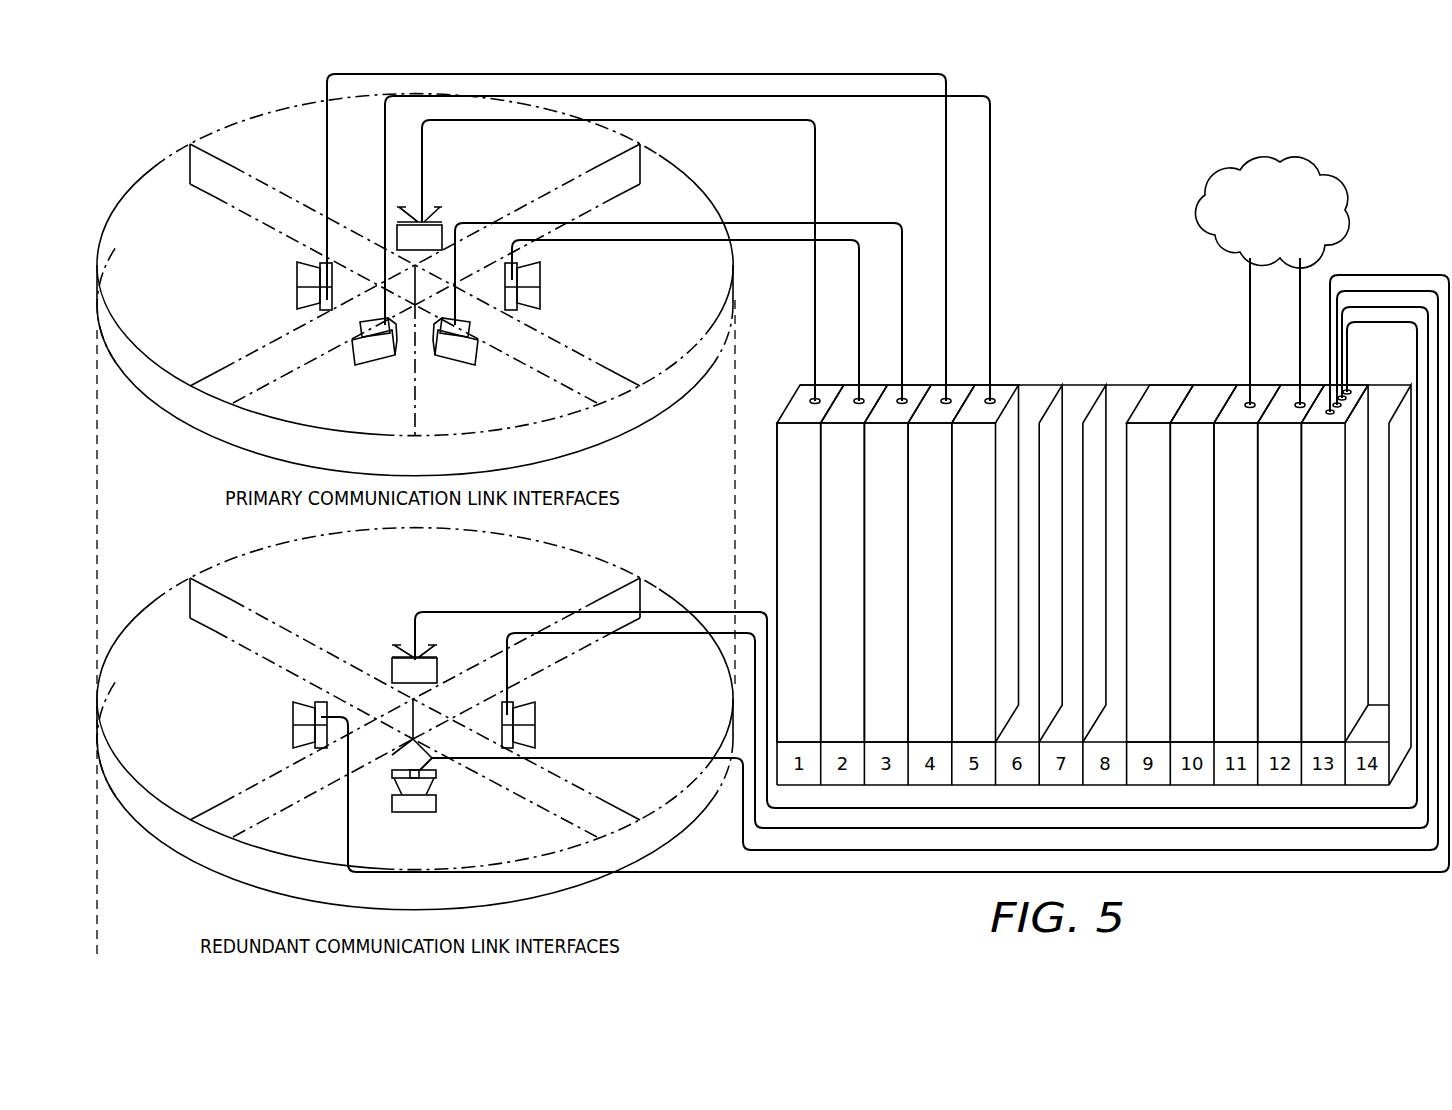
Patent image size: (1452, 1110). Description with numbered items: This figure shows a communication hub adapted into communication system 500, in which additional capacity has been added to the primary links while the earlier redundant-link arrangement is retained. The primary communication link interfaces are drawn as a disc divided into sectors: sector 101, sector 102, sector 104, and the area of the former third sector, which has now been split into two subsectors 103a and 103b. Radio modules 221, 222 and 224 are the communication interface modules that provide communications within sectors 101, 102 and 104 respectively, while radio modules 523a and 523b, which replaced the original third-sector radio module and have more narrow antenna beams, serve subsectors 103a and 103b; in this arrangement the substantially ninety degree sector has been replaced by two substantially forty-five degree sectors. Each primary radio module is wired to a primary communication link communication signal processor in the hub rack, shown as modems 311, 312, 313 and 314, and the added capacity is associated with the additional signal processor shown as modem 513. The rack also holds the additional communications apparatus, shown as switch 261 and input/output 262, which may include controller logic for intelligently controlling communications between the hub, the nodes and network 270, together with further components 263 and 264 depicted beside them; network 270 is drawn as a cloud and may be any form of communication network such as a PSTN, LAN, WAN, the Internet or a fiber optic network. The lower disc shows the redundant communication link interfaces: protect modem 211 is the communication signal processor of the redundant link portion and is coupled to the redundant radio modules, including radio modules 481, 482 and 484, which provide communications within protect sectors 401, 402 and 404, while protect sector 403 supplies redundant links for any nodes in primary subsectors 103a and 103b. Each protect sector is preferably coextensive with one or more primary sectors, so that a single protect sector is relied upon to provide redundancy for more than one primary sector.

The sector 101 is at (258, 112).
The sector 102 is at (740, 208).
The subsector 103a is at (608, 356).
The subsector 103b is at (248, 370).
The sector 104 is at (172, 373).
The radio module 221 is at (441, 200).
The radio module 222 is at (550, 280).
The radio module 224 is at (285, 277).
The radio module 523a is at (472, 372).
The radio module 523b is at (360, 372).
The modem 311 is at (797, 397).
The modem 312 is at (872, 388).
The modem 313 is at (916, 388).
The modem 314 is at (960, 388).
The modem 513 is at (1004, 388).
The switch 261 is at (1160, 392).
The reference/controller/switch (protect) 263 is at (1205, 390).
The input/output (I/O) 262 is at (1228, 392).
The OC-12C protect I/O card 264 is at (1282, 392).
The protect modem 211 is at (1362, 392).
The network 270 is at (1278, 154).
The communication system 500 is at (1106, 166).
The protect sector 401 is at (258, 552).
The protect sector 402 is at (655, 598).
The protect sector 403 is at (246, 804).
The protect sector 404 is at (165, 820).
The radio module 481 is at (400, 643).
The radio module 482 is at (548, 714).
The radio module 484 is at (278, 714).